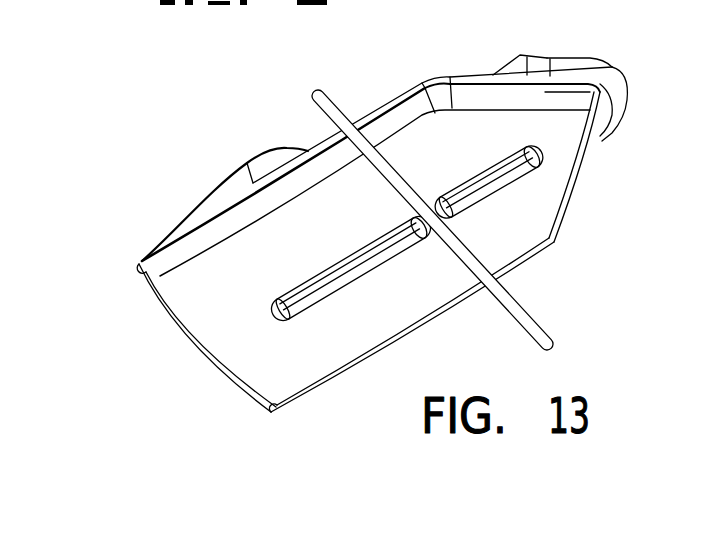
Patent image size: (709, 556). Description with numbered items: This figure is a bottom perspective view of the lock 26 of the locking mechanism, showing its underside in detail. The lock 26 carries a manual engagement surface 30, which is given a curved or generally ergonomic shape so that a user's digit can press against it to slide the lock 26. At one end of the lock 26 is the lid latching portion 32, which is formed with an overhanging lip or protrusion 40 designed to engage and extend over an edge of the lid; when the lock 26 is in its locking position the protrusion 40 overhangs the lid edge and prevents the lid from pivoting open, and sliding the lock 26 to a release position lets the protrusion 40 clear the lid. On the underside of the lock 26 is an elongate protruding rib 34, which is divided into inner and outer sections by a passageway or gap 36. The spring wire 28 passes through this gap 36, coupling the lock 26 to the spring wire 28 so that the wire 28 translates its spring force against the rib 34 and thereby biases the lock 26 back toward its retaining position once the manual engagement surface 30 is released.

The lock 26 is at (268, 348).
The spring wire 28 is at (338, 107).
The manual engagement surface 30 is at (200, 200).
The lid latching portion 32 is at (540, 60).
The rib 34 is at (354, 253).
The gap 36 is at (427, 230).
The protrusion 40 is at (628, 97).